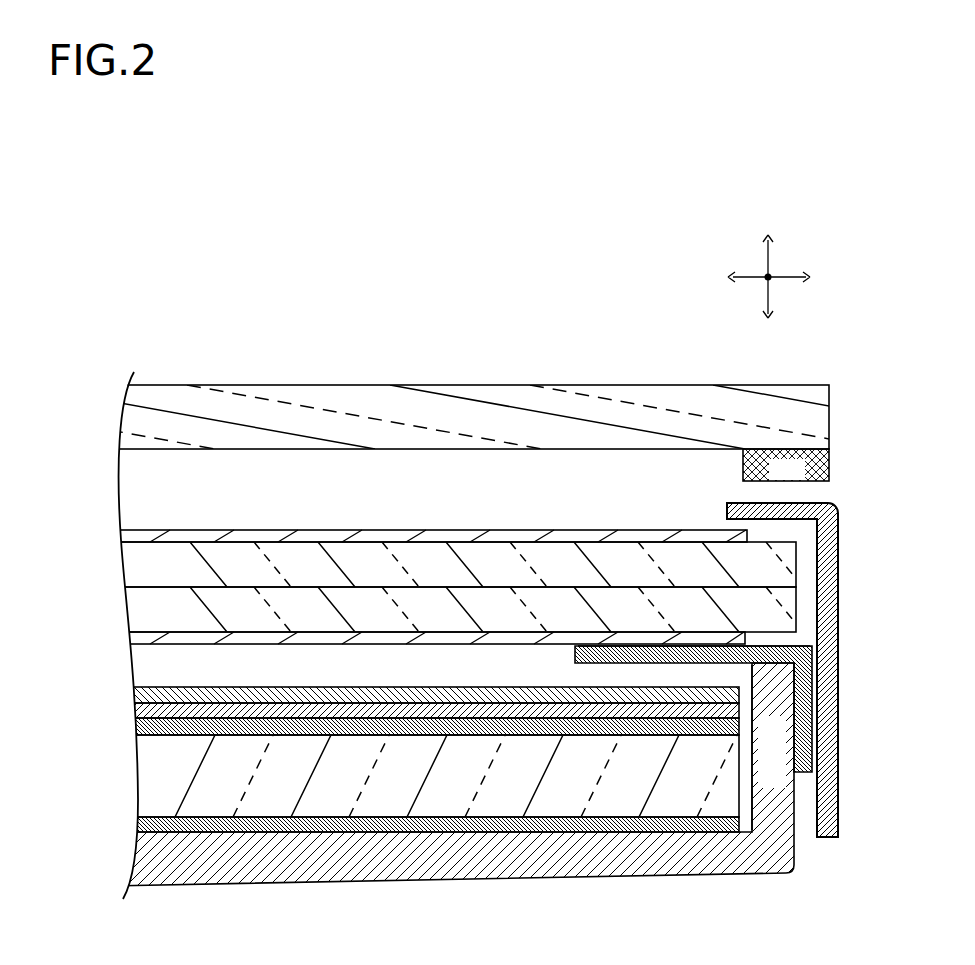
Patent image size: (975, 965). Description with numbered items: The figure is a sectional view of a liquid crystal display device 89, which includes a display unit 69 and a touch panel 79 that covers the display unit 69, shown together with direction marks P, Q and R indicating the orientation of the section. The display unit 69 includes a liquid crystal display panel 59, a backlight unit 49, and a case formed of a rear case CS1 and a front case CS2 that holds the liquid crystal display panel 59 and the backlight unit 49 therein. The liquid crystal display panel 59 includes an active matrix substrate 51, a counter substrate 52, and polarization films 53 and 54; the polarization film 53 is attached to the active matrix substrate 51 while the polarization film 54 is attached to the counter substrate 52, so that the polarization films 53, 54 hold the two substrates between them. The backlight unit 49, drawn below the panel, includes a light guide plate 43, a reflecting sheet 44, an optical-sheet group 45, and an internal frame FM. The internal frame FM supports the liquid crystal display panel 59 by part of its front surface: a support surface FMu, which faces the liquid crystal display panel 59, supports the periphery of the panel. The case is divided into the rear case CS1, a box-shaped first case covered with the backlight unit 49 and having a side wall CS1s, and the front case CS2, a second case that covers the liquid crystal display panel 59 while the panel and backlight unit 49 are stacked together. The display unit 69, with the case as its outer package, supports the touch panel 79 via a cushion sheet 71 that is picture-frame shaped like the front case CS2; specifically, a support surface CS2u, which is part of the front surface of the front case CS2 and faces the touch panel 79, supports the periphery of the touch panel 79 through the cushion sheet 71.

The liquid crystal display device 89 is at (163, 302).
The touch panel 79 is at (130, 424).
The cushion sheet 71 is at (786, 465).
The display unit 69 is at (65, 475).
The liquid crystal display panel 59 is at (104, 508).
The polarization film 54 is at (133, 524).
The counter substrate 52 is at (454, 564).
The active matrix substrate 51 is at (454, 609).
The polarization film 53 is at (136, 643).
The backlight unit 49 is at (100, 684).
The optical-sheet group 45 is at (133, 686).
The light guide plate 43 is at (148, 790).
The reflecting sheet 44 is at (152, 827).
The rear case CS1 is at (134, 877).
The side wall CS1s is at (769, 747).
The front case CS2 is at (833, 840).
The support surface CS2u is at (751, 493).
The internal frame FM is at (642, 664).
The support surface FMu is at (570, 656).
The reference point P is at (776, 290).
The Q direction Q is at (768, 279).
The R direction R is at (769, 277).